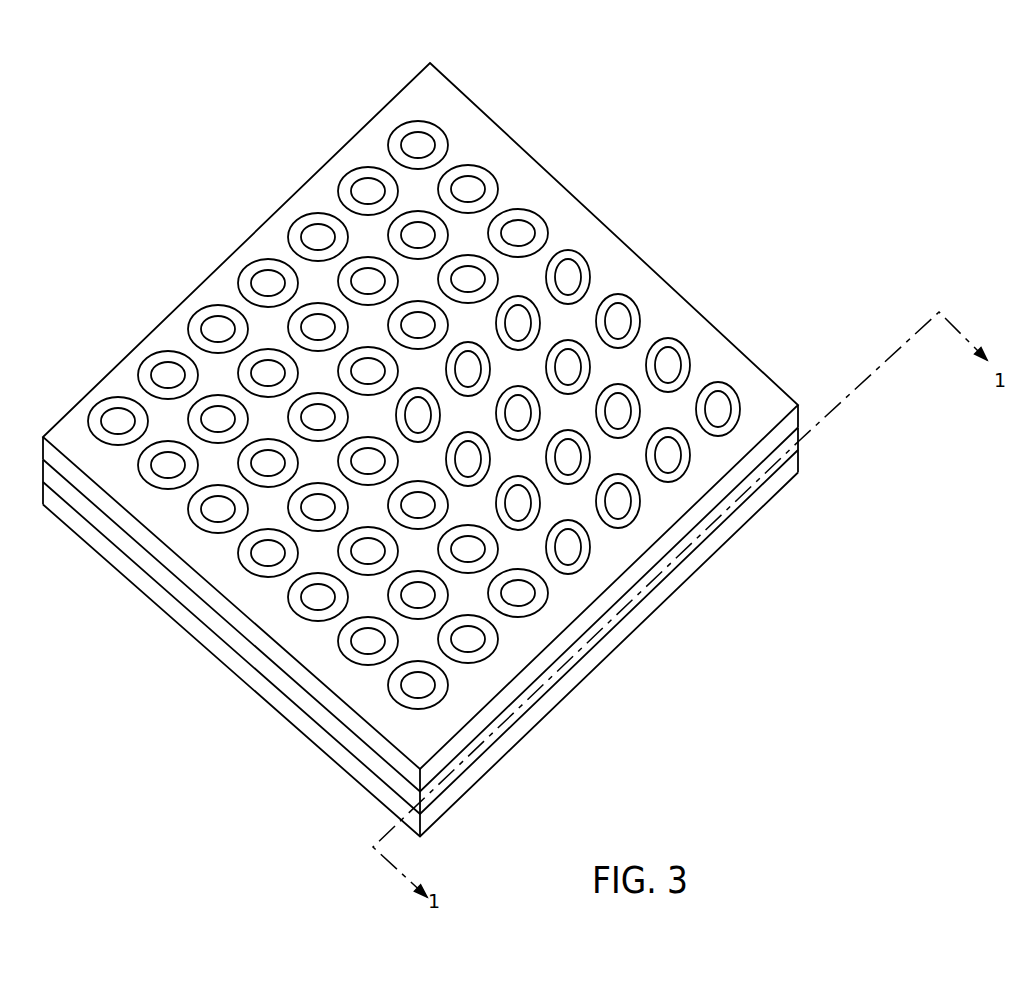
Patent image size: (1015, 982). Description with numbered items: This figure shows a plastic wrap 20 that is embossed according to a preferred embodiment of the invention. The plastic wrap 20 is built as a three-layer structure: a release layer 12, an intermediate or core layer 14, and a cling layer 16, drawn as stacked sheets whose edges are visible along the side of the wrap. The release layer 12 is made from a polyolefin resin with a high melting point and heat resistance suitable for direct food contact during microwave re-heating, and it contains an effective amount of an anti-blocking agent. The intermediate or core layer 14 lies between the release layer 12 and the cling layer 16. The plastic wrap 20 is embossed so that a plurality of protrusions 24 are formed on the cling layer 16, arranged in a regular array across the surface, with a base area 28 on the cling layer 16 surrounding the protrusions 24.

The bottom layer / substrate 12 is at (588, 662).
The middle layer 14 is at (662, 575).
The top layer 16 is at (717, 492).
The multilayer apertured structure 20 is at (420, 450).
The apertures / ring-shaped openings 24 is at (417, 147).
The top surface 28 is at (617, 258).